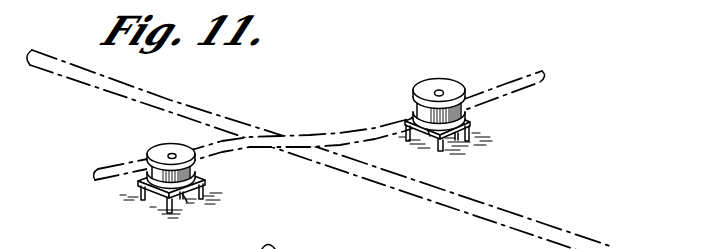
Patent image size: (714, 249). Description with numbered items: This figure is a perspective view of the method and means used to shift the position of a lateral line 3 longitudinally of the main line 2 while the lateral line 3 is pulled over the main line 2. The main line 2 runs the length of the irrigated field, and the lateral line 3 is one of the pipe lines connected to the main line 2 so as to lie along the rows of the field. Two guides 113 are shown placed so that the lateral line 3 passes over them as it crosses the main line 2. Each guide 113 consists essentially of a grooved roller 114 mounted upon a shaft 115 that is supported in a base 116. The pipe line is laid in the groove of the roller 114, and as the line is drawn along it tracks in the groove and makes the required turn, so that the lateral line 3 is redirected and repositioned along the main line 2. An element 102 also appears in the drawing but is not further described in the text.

The main line 2 is at (539, 220).
The lateral line 3 is at (512, 98).
The base member 102 is at (316, 240).
The guide 113 is at (157, 201).
The grooved roller 114 is at (159, 146).
The shaft 115 is at (175, 155).
The base 116 is at (183, 195).